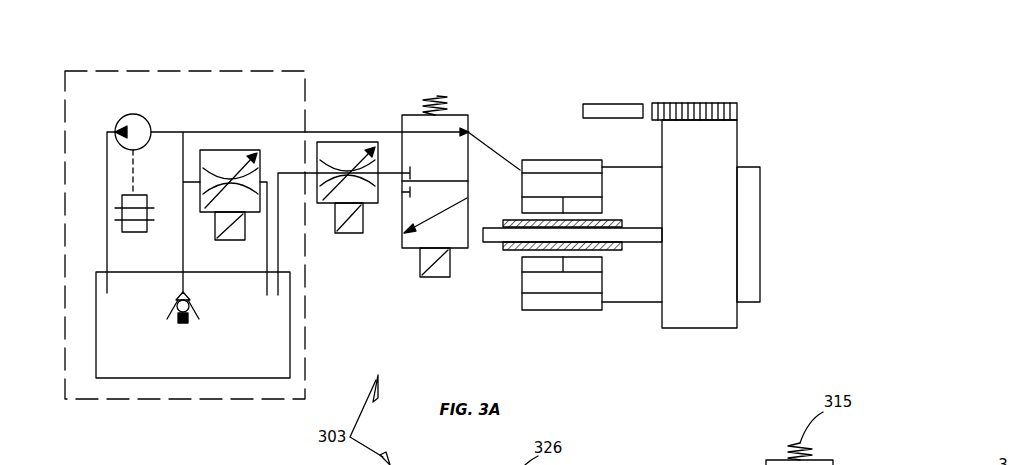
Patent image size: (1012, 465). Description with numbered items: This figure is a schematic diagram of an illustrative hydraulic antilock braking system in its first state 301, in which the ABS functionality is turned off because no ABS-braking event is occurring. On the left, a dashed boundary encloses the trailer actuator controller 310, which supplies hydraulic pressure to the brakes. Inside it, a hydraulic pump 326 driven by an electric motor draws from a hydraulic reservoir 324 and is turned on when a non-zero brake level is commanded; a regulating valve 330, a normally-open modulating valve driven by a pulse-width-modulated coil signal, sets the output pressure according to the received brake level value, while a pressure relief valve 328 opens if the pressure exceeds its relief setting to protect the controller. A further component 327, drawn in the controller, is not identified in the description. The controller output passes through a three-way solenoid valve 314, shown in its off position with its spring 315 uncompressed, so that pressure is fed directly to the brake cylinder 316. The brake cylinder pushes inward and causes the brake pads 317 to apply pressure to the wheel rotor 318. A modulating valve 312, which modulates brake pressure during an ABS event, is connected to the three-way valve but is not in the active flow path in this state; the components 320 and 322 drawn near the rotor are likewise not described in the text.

The first state 301 is at (877, 138).
The trailer actuator controller 310 is at (132, 400).
The modulating valve 312 is at (349, 233).
The three-way solenoid valve 314 is at (430, 277).
The spring 315 is at (437, 97).
The brake cylinder 316 is at (580, 355).
The brake pads 317 is at (607, 218).
The brake rotor 318 is at (483, 242).
The gear 320 is at (693, 102).
The plate 322 is at (607, 102).
The hydraulic reservoir 324 is at (222, 378).
The hydraulic pump 326 is at (134, 114).
The filter 327 is at (135, 232).
The pressure relief valve 328 is at (195, 313).
The regulating valve 330 is at (220, 240).